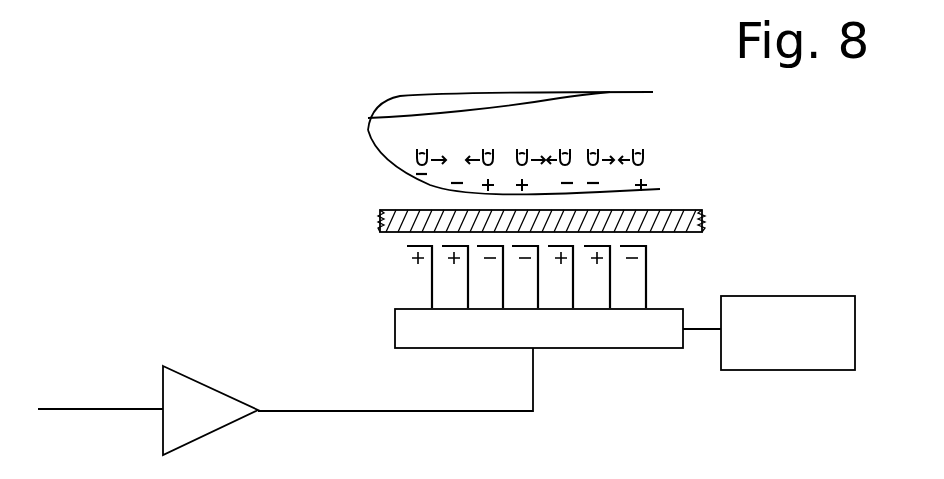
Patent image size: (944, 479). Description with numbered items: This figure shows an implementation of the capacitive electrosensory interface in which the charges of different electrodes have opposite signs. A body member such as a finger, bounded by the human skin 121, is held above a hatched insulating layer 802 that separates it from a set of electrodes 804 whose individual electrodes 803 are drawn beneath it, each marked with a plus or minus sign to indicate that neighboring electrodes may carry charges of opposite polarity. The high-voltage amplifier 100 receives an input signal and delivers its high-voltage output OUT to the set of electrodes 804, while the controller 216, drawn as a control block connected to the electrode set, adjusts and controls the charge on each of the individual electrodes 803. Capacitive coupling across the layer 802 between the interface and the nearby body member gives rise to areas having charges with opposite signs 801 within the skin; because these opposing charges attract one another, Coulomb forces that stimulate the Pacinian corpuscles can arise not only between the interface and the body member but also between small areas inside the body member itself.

The human skin 121 is at (368, 123).
The areas having charges with opposite signs 801 is at (680, 159).
The insulating layer 802 is at (358, 219).
The individual electrodes 803 is at (393, 257).
The set of electrodes 804 is at (395, 322).
The high-voltage amplifier 100 is at (218, 386).
The controller 216 is at (794, 370).